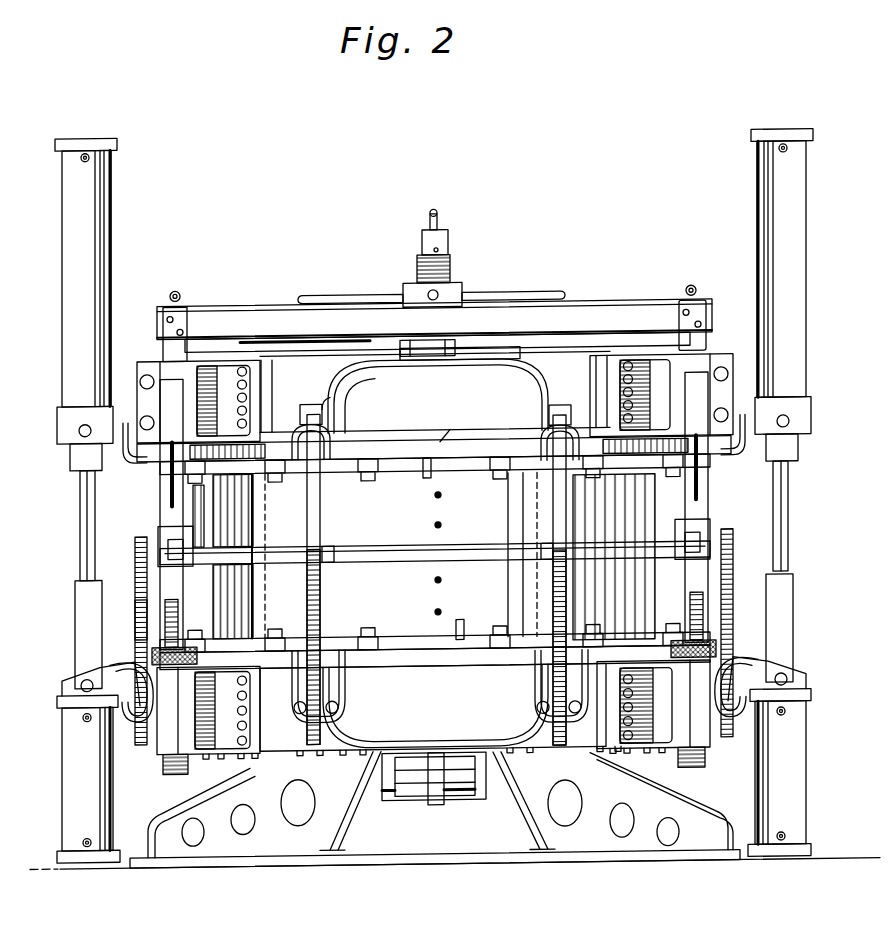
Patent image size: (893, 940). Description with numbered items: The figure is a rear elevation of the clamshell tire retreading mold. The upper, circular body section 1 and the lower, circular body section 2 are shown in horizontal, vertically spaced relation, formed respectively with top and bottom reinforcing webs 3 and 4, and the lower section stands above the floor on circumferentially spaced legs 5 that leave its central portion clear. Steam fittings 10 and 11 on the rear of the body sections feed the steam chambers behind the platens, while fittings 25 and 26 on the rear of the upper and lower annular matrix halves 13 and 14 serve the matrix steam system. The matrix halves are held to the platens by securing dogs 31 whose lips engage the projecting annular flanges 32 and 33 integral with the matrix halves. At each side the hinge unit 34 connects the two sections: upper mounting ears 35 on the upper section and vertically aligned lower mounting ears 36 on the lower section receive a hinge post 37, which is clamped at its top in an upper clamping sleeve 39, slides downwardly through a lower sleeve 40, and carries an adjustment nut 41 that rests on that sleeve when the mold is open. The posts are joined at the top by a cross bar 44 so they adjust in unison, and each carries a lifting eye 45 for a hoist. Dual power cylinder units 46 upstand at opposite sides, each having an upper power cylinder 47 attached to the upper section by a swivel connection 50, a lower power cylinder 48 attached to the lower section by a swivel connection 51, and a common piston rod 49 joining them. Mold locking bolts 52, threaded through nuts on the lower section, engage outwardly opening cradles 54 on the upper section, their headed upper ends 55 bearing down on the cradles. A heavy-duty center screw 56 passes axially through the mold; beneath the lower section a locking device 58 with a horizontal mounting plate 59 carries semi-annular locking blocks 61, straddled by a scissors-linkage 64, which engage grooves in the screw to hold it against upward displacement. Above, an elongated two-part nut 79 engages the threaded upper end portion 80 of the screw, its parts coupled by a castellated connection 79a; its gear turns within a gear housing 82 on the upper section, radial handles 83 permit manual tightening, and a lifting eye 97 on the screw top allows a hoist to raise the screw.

The upper circular body section 1 is at (366, 446).
The lower circular body section 2 is at (367, 662).
The reinforcing web 3 is at (525, 385).
The reinforcing web 4 is at (498, 730).
The legs 5 is at (318, 850).
The fitting 10 is at (440, 440).
The fitting 11 is at (440, 635).
The upper annular matrix half 13 is at (212, 497).
The lower annular matrix half 14 is at (140, 620).
The fitting 25 is at (435, 524).
The fitting 26 is at (435, 611).
The securing dogs 31 is at (368, 482).
The annular flange 32 is at (462, 474).
The annular flange 33 is at (336, 636).
The hinge unit 34 is at (707, 298).
The upper mounting ears 35 is at (242, 345).
The lower mounting ears 36 is at (212, 760).
The hinge post 37 is at (158, 517).
The upper clamping sleeve 39 is at (150, 361).
The lower sleeve 40 is at (170, 740).
The adjustment nut 41 is at (172, 667).
The cross bar 44 is at (246, 305).
The lifting eye 45 is at (178, 292).
The dual power cylinder units 46 is at (118, 183).
The upper power cylinder 47 is at (101, 250).
The lower power cylinder 48 is at (100, 790).
The common piston rod 49 is at (84, 510).
The swivel connection 50 is at (84, 441).
The swivel connection 51 is at (100, 681).
The mold locking bolts 52 is at (312, 505).
The cradles 54 is at (300, 425).
The headed upper ends 55 is at (331, 410).
The center screw 56 is at (446, 235).
The locking device 58 is at (421, 808).
The mounting plate 59 is at (385, 793).
The locking blocks 61 is at (452, 793).
The scissors-linkage 64 is at (430, 777).
The elongated nut 79 is at (410, 283).
The castellated connection 79a is at (445, 300).
The threaded upper end portion 80 is at (450, 265).
The gear housing 82 is at (500, 350).
The radial handles 83 is at (340, 295).
The lifting eye 97 is at (430, 215).